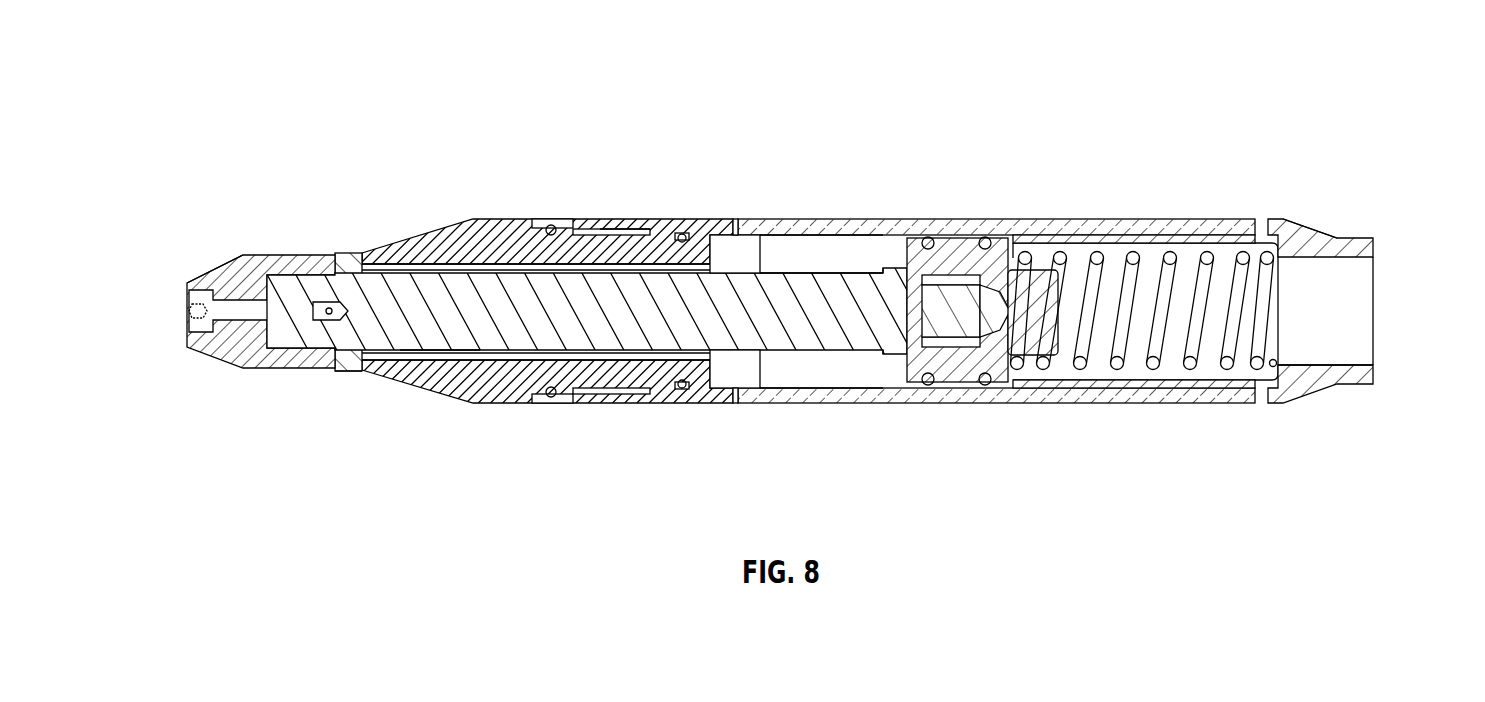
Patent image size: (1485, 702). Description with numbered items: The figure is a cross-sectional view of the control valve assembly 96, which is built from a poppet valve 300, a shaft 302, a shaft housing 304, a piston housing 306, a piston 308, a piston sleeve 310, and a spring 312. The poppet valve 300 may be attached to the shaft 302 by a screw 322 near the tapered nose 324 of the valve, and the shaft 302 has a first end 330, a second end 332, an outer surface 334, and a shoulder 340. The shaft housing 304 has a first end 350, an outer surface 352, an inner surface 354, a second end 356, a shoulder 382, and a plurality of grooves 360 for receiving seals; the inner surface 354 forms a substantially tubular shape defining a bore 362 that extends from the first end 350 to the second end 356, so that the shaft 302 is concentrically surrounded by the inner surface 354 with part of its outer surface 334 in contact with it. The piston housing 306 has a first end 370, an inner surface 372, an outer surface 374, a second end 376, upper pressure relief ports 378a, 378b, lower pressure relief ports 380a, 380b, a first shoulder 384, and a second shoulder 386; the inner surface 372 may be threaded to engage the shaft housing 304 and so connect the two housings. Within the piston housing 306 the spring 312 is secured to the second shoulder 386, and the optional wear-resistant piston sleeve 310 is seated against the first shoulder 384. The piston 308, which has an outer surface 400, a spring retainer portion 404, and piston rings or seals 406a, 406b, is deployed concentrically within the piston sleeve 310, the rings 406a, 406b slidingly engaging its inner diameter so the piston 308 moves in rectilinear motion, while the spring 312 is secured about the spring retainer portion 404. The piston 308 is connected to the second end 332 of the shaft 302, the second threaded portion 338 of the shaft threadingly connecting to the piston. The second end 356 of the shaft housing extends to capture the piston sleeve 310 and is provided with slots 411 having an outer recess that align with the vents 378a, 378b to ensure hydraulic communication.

The control valve assembly 96 is at (990, 98).
The poppet valve 300 is at (246, 256).
The shaft 302 is at (337, 372).
The shaft housing 304 is at (481, 402).
The piston housing 306 is at (1186, 218).
The piston 308 is at (945, 383).
The piston sleeve 310 is at (872, 402).
The spring 312 is at (1208, 364).
The screw 322 is at (190, 312).
The tapered nose surface 324 is at (213, 266).
The first end 330 is at (316, 300).
The second end 332 is at (885, 268).
The outer surface 334 is at (436, 351).
The second threaded portion 338 is at (1358, 364).
The shoulder 340 is at (347, 253).
The first end 350 is at (384, 256).
The outer surface 352 is at (470, 217).
The inner surface 354 is at (472, 274).
The second end 356 is at (762, 252).
The grooves 360 is at (682, 234).
The bore 362 is at (486, 357).
The first end 370 is at (548, 225).
The inner surface 372 is at (626, 229).
The outer surface 374 is at (583, 229).
The second end 376 is at (1376, 248).
The upper pressure relief port 378a is at (737, 219).
The upper pressure relief port 378b is at (738, 403).
The lower pressure relief port 380a is at (1261, 219).
The lower pressure relief port 380b is at (1263, 404).
The shoulder 382 is at (555, 396).
The first shoulder 384 is at (1017, 386).
The second shoulder 386 is at (1302, 230).
The outer surface 400 is at (958, 384).
The spring retainer portion 404 is at (1032, 240).
The piston ring/seal 406a is at (931, 237).
The piston ring/seal 406b is at (988, 237).
The slots 411 is at (722, 373).